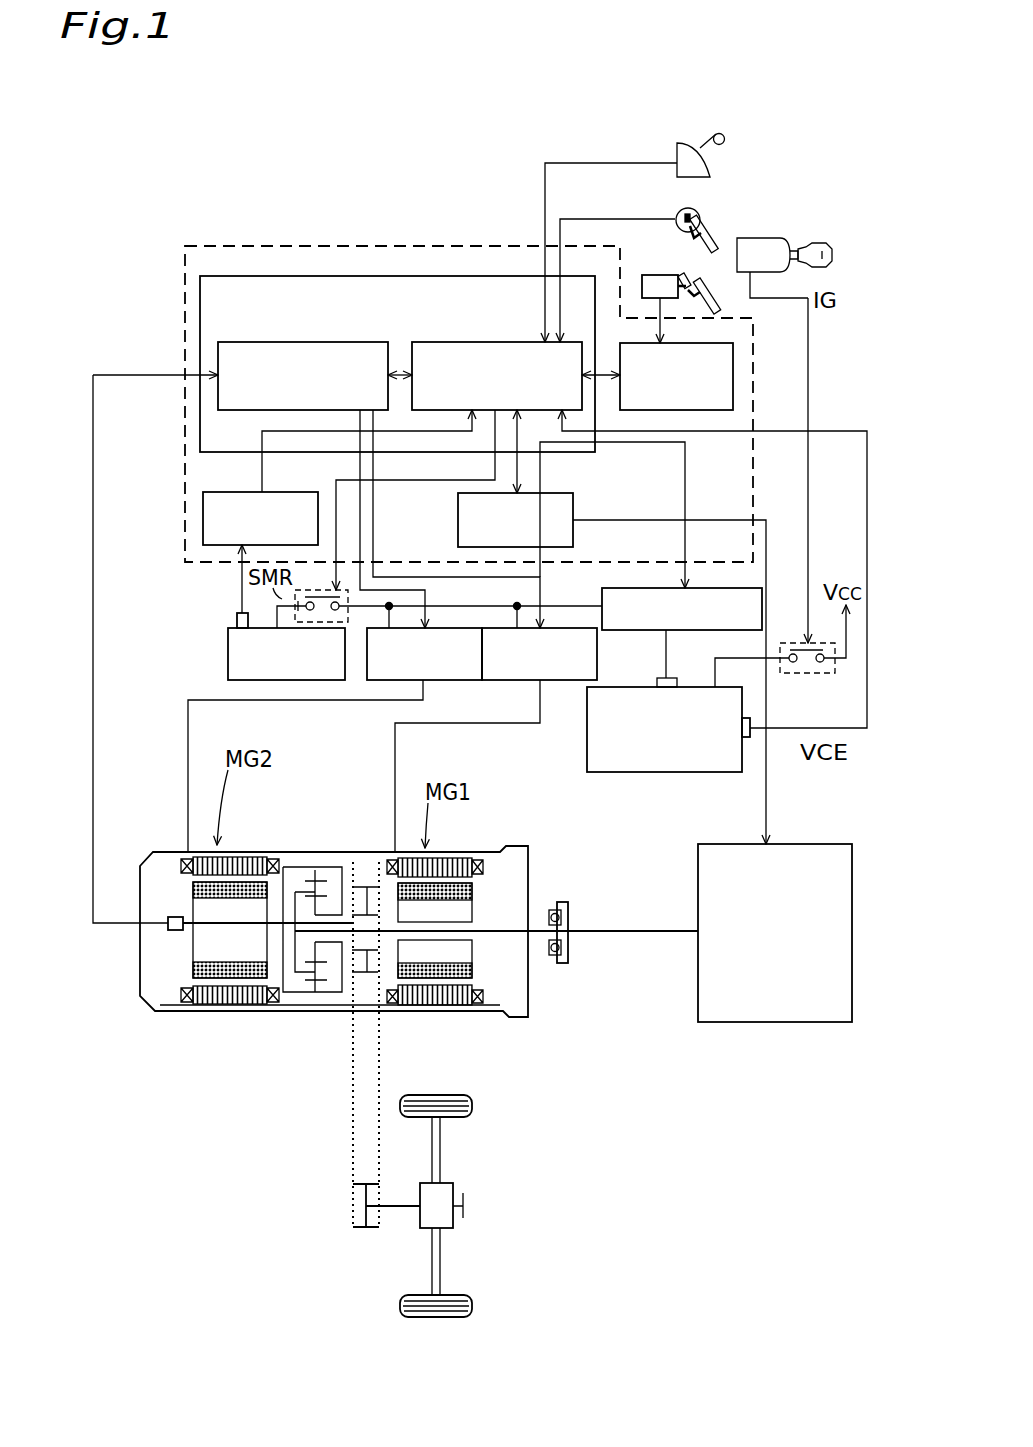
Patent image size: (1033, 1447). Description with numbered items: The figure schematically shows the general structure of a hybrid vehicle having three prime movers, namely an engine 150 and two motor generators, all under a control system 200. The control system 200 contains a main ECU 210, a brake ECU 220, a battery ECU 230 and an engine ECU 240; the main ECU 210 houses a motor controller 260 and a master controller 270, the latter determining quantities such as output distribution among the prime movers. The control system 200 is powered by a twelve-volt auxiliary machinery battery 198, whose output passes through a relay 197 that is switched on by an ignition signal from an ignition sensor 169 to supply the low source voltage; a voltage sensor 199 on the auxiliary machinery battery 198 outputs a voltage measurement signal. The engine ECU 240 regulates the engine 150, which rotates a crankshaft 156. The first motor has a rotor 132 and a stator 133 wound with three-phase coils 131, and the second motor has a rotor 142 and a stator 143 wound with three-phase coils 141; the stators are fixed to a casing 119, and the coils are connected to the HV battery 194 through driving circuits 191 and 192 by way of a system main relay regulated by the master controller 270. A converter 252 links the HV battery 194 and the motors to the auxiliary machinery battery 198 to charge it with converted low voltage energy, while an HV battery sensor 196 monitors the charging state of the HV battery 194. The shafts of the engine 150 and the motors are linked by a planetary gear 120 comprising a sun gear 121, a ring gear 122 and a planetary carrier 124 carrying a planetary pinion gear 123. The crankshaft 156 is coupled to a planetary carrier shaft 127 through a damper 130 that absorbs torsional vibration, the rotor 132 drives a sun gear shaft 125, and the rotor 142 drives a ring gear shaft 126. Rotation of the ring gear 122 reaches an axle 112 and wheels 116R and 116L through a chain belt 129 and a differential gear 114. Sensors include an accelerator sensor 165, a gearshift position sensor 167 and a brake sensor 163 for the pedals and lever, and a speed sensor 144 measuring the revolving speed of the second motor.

The axle 112 is at (441, 1147).
The differential gear 114 is at (453, 1190).
The wheel 116L is at (473, 1306).
The wheel 116R is at (473, 1104).
The casing 119 is at (200, 1012).
The planetary gear 120 is at (304, 869).
The sun gear 121 is at (322, 912).
The ring gear 122 is at (318, 870).
The planetary pinion gear 123 is at (313, 877).
The planetary carrier 124 is at (296, 893).
The sun gear shaft 125 is at (383, 868).
The ring gear shaft 126 is at (202, 930).
The planetary carrier shaft 127 is at (506, 935).
The chain belt 129 is at (353, 1155).
The damper 130 is at (562, 963).
The three-phase coil 131 is at (483, 865).
The rotor 132 is at (467, 912).
The stator 133 is at (452, 865).
The three-phase coil 141 is at (278, 1003).
The rotor 142 is at (193, 948).
The stator 143 is at (207, 840).
The speed sensor 144 is at (170, 917).
The engine 150 is at (705, 844).
The crankshaft 156 is at (612, 930).
The brake sensor 163 is at (654, 275).
The accelerator sensor 165 is at (682, 210).
The gearshift position sensor 167 is at (681, 138).
The ignition sensor 169 is at (763, 238).
The driving circuit 191 is at (538, 681).
The driving circuit 192 is at (441, 681).
The HV battery 194 is at (228, 650).
The HV battery sensor 196 is at (237, 620).
The relay 197 is at (803, 673).
The auxiliary machinery battery 198 is at (628, 773).
The voltage sensor 199 is at (746, 740).
The control system 200 is at (250, 246).
The main ECU 210 is at (397, 364).
The brake ECU 220 is at (690, 343).
The battery ECU 230 is at (272, 492).
The engine ECU 240 is at (557, 493).
The converter 252 is at (602, 600).
The motor controller 260 is at (252, 342).
The master controller 270 is at (448, 342).